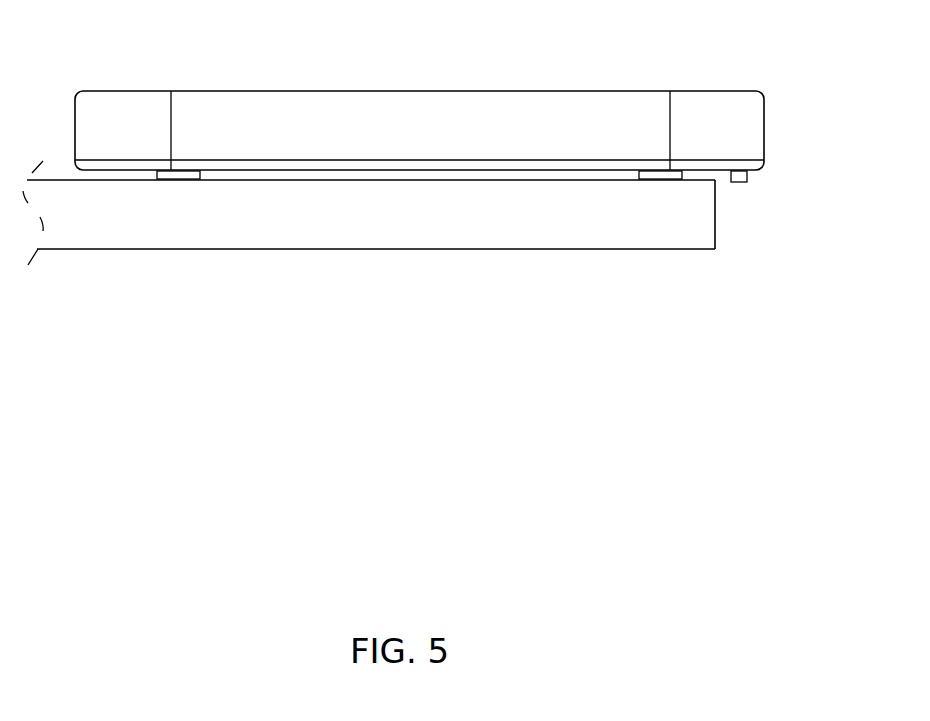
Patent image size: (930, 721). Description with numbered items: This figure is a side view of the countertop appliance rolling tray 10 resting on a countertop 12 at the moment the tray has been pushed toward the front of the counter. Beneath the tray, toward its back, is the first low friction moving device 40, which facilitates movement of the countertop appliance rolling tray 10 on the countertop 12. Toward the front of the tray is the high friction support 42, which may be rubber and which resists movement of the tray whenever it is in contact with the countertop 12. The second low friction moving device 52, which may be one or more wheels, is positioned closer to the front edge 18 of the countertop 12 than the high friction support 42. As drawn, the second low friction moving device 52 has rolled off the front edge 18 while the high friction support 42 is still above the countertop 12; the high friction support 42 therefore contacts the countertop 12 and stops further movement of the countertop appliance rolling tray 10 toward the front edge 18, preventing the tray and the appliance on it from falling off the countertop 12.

The countertop appliance rolling tray 10 is at (403, 90).
The countertop 12 is at (233, 237).
The front edge of the countertop 18 is at (716, 217).
The first low friction moving device 40 is at (187, 175).
The high friction support 42 is at (665, 175).
The second low friction moving device 52 is at (747, 182).